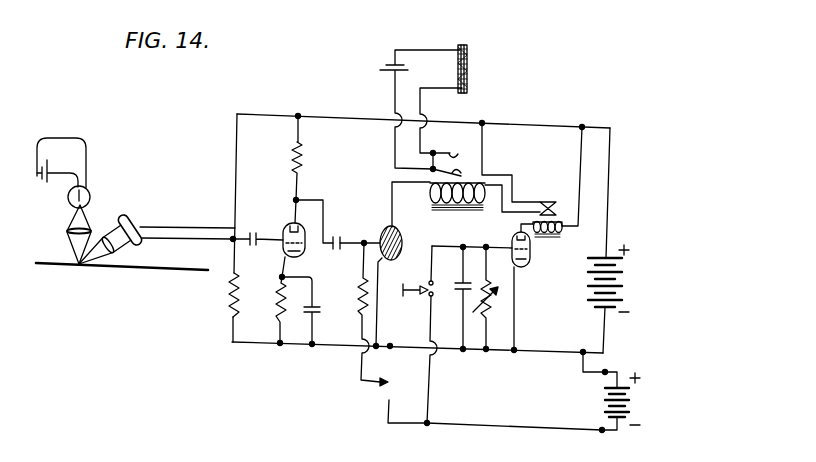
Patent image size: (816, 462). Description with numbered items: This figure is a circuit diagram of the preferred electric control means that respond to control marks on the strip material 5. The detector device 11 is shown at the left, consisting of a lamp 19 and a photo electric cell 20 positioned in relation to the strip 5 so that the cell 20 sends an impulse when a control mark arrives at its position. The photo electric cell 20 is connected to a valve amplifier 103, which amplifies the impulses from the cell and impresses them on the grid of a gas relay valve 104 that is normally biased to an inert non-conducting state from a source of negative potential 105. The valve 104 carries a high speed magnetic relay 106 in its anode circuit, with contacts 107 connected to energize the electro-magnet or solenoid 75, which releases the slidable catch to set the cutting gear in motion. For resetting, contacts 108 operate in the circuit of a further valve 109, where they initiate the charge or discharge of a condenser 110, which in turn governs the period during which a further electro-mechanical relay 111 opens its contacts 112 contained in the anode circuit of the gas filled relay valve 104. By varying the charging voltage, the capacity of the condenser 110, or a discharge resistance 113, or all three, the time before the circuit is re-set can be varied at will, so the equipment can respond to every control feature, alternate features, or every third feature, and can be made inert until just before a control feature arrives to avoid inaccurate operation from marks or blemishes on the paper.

The strip material 5 is at (185, 272).
The detector device 11 is at (115, 191).
The lamp 19 is at (73, 201).
The photo electric cell 20 is at (133, 222).
The electro-magnet or solenoid 75 is at (470, 68).
The valve amplifier 103 is at (288, 225).
The gas relay valve 104 is at (380, 237).
The source of negative potential 105 is at (605, 397).
The high speed magnetic relay 106 is at (427, 199).
The contacts 107 is at (461, 166).
The contacts 108 is at (420, 298).
The further valve 109 is at (530, 265).
The condenser 110 is at (457, 293).
The electro-mechanical relay 111 is at (562, 236).
The contacts 112 is at (556, 208).
The discharge resistance 113 is at (488, 300).